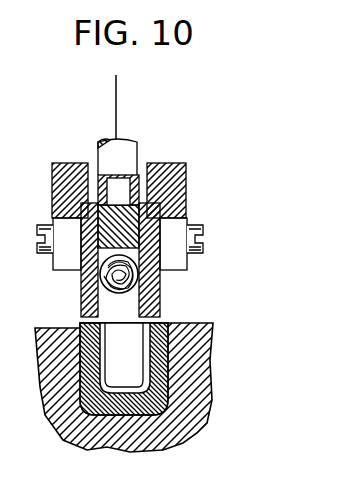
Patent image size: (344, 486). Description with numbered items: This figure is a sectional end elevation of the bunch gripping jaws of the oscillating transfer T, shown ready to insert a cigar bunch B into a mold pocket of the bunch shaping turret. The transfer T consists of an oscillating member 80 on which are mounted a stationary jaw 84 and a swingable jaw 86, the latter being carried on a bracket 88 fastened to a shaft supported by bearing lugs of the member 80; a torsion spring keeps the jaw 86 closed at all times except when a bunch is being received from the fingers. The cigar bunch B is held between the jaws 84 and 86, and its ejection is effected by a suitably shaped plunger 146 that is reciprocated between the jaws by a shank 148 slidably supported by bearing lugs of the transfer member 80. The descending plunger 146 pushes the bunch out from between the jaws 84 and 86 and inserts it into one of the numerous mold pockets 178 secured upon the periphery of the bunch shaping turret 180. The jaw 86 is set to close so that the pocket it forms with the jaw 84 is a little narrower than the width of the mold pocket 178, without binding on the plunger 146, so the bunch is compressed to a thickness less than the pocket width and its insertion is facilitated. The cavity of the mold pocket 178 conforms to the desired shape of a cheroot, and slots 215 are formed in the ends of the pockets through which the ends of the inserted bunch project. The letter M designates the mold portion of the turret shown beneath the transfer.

The bracket 88 is at (53, 163).
The oscillating member 80 is at (187, 193).
The shank 148 is at (131, 150).
The plunger 146 is at (102, 228).
The swingable jaw 86 is at (81, 297).
The stationary jaw 84 is at (160, 296).
The cigar bunch B is at (127, 296).
The transfer T is at (195, 192).
The mold M is at (202, 316).
The bunch shaping turret 180 is at (178, 350).
The mold pocket 178 is at (160, 381).
The slot 215 is at (107, 358).